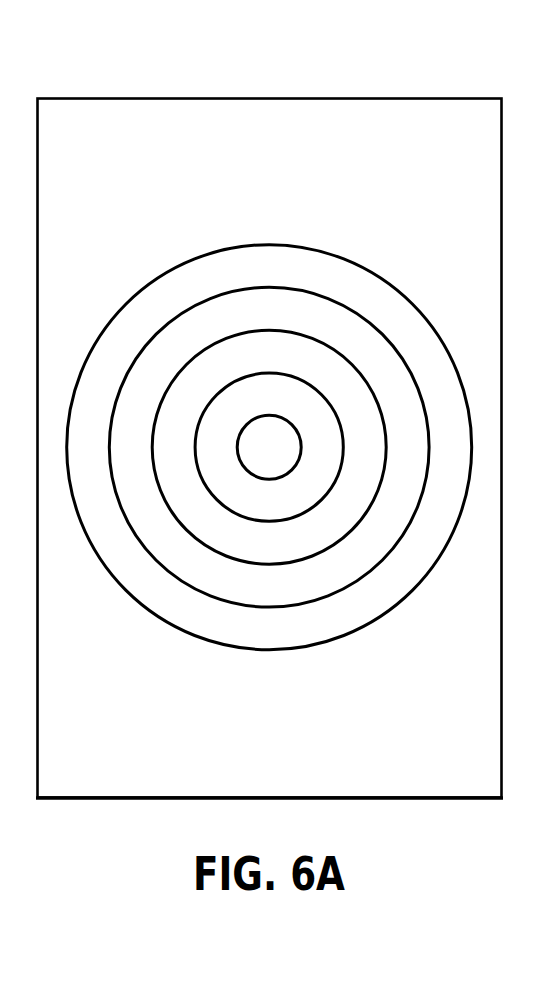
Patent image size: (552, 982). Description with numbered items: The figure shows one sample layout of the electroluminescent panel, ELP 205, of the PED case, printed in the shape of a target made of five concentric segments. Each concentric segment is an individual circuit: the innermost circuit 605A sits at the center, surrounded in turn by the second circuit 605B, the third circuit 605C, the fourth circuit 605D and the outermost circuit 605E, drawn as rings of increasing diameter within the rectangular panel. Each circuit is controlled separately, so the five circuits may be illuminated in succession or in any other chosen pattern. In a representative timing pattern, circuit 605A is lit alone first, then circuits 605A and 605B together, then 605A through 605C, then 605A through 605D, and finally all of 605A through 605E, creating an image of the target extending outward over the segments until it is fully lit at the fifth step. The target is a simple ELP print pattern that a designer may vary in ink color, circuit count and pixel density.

The ELP 205 is at (268, 98).
The individual circuit 605A is at (245, 461).
The individual circuit 605B is at (245, 509).
The individual circuit 605C is at (245, 554).
The individual circuit 605D is at (245, 598).
The individual circuit 605E is at (245, 640).